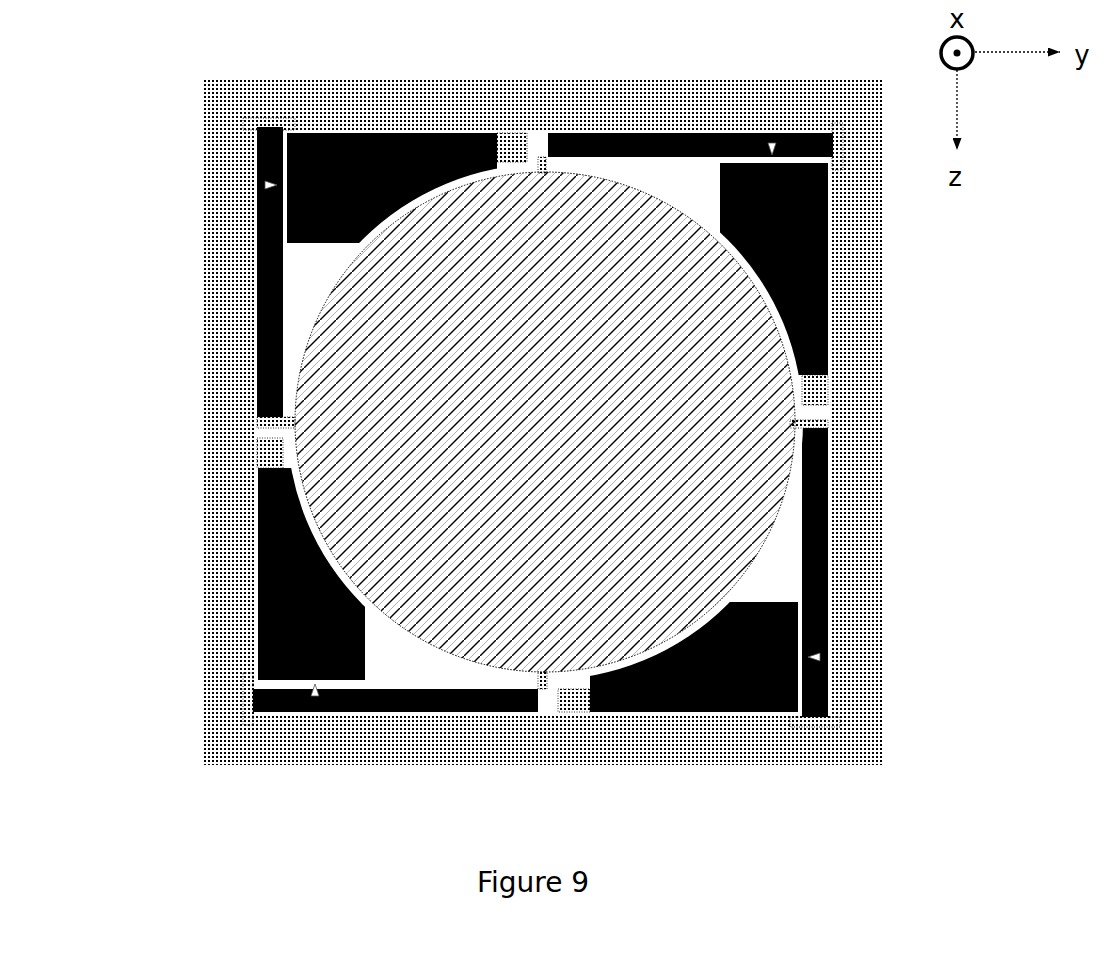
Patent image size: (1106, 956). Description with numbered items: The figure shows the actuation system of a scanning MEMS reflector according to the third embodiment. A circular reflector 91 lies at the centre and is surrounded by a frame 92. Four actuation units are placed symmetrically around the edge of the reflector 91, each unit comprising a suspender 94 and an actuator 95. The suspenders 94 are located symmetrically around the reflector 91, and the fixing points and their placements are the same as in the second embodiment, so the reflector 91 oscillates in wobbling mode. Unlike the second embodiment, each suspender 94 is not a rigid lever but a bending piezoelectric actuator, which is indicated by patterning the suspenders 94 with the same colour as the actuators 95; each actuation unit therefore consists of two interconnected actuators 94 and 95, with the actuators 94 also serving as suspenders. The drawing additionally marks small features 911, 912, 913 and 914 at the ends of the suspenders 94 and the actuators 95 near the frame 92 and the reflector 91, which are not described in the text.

The circular reflector 91 is at (622, 318).
The frame 92 is at (850, 515).
The suspender 94 is at (257, 250).
The actuator 95 is at (257, 556).
The anchor 911 is at (262, 125).
The connecting bridge 912 is at (285, 424).
The marker 913 is at (265, 185).
The connection pad 914 is at (258, 460).